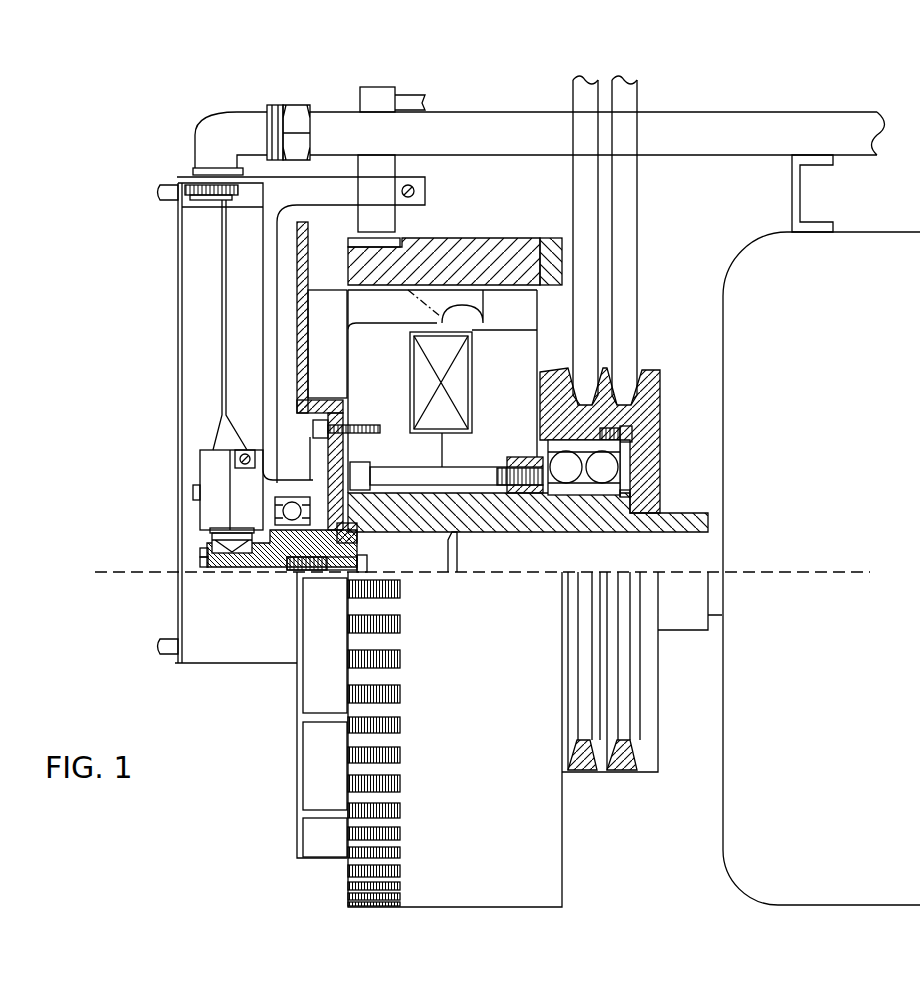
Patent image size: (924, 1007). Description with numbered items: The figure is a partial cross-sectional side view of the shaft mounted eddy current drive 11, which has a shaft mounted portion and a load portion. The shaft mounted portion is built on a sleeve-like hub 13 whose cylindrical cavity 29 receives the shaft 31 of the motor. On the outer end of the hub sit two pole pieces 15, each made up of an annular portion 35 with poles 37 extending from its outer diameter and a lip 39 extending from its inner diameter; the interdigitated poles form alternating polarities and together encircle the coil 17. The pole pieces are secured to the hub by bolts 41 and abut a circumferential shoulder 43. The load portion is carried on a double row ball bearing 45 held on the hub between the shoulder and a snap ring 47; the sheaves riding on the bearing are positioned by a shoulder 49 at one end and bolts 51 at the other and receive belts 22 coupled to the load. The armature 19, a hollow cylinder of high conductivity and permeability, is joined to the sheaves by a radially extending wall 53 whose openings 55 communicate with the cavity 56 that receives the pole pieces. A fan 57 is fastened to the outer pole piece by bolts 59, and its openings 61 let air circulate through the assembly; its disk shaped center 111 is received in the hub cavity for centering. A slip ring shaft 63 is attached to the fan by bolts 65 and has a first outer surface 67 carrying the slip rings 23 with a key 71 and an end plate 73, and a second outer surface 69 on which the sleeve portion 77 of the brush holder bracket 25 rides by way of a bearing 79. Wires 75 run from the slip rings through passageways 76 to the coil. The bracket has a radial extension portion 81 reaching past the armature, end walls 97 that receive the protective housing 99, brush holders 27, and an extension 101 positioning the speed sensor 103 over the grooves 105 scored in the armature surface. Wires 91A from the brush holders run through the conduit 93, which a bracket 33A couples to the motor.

The drive 11 is at (496, 212).
The hub 13 is at (692, 513).
The pole pieces 15 is at (395, 300).
The coil 17 is at (466, 357).
The armature 19 is at (452, 255).
The belts 22 is at (620, 185).
The slip rings 23 is at (237, 537).
The brush holder bracket 25 is at (268, 312).
The brush holders 27 is at (243, 490).
The cylindrical cavity 29 is at (425, 560).
The shaft 31 is at (722, 530).
The bracket 33A is at (800, 194).
The annular portion 35 is at (528, 388).
The poles 37 is at (485, 298).
The lip 39 is at (455, 432).
The bolts 41 is at (463, 478).
The circumferential shoulder 43 is at (535, 490).
The bearings 45 is at (602, 465).
The snap ring 47 is at (626, 492).
The shoulder 49 is at (598, 428).
The bolts 51 is at (632, 431).
The radially extending wall 53 is at (512, 362).
The openings 55 is at (562, 297).
The cavity 56 is at (540, 283).
The fan 57 is at (300, 297).
The bolts 59 is at (313, 425).
The openings 61 is at (327, 298).
The slip ring shaft 63 is at (247, 570).
The bolts 65 is at (367, 563).
The first outer surface 67 is at (218, 547).
The second outer surface 69 is at (275, 572).
The key 71 is at (202, 570).
The end plate 73 is at (203, 558).
The wires 75 is at (345, 352).
The passageways 76 is at (338, 533).
The sleeve portion 77 is at (273, 483).
The bearing 79 is at (292, 513).
The radial extension portion 81 is at (267, 268).
The wire 91A is at (223, 233).
The conduit 93 is at (218, 127).
The end walls 97 is at (193, 177).
The housing 99 is at (182, 652).
The extension 101 is at (322, 187).
The speed sensor 103 is at (403, 97).
The grooves 105 is at (353, 243).
The center 111 is at (353, 540).